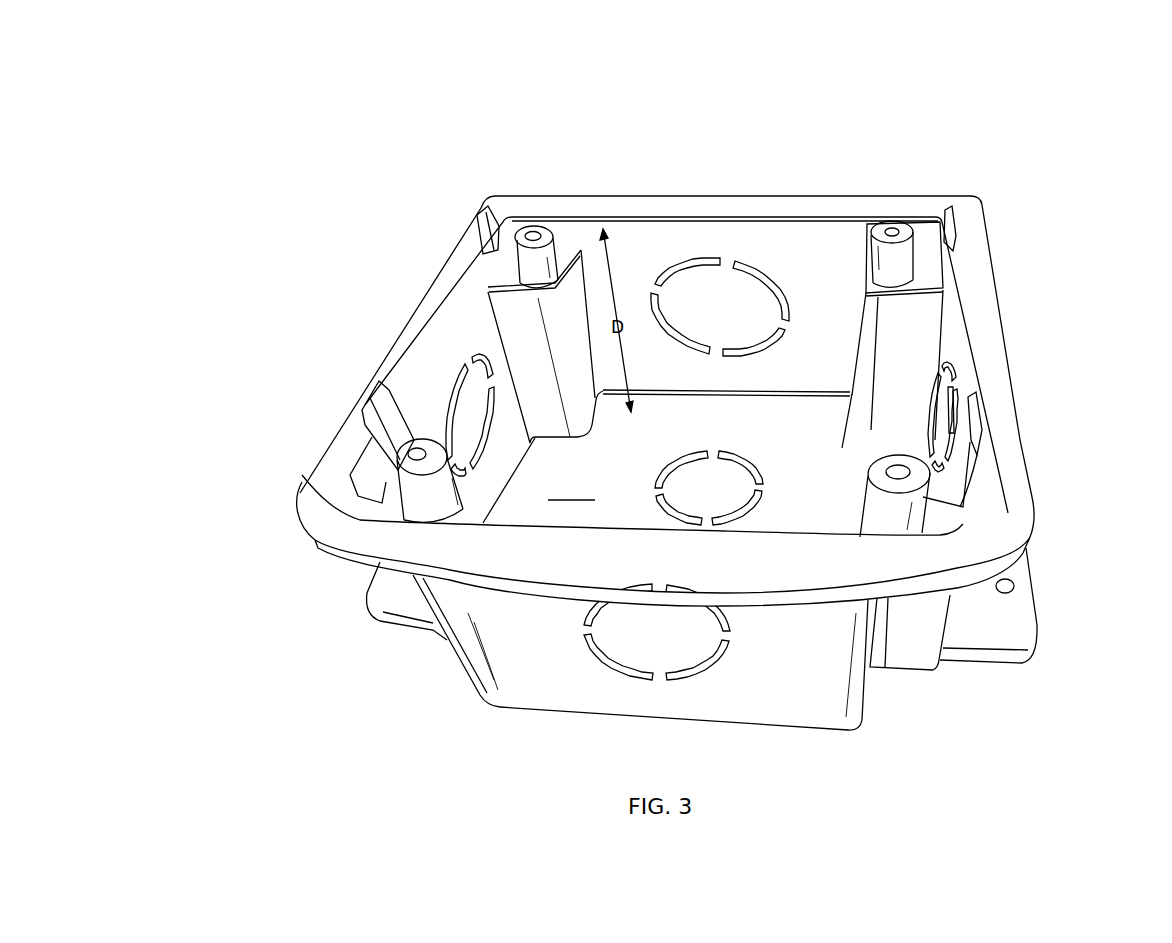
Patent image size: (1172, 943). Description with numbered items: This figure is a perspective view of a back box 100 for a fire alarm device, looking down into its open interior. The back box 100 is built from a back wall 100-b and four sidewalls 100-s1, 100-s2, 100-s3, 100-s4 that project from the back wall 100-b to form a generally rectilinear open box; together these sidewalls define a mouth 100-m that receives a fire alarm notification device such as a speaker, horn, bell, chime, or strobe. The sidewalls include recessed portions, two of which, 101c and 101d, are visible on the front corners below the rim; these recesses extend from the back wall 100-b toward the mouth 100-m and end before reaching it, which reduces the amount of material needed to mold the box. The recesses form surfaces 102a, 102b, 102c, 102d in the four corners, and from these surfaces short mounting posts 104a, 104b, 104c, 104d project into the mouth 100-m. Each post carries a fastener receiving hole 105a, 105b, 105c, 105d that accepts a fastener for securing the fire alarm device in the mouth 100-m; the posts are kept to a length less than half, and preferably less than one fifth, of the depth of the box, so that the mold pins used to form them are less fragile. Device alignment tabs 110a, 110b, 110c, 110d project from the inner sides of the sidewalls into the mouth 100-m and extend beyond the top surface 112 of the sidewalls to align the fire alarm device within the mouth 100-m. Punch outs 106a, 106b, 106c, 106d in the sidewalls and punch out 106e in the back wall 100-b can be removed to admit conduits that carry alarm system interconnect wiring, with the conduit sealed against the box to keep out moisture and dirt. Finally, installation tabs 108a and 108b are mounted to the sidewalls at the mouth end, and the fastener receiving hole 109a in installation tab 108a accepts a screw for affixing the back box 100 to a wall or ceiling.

The back box 100 is at (338, 114).
The mouth 100-m is at (832, 182).
The back wall 100-b is at (572, 491).
The sidewall 100-s1 is at (700, 232).
The sidewall 100-s2 is at (470, 330).
The sidewall 100-s3 is at (517, 690).
The sidewall 100-s4 is at (940, 333).
The recessed portion 101c is at (461, 662).
The recessed portion 101d is at (902, 689).
The surface 102a is at (497, 280).
The surface 102b is at (933, 280).
The surface 102c is at (377, 502).
The surface 102d is at (963, 524).
The mounting post 104a is at (548, 231).
The mounting post 104b is at (910, 223).
The mounting post 104c is at (397, 458).
The mounting post 104d is at (872, 470).
The fastener receiving hole 105a is at (533, 231).
The fastener receiving hole 105b is at (892, 229).
The fastener receiving hole 105c is at (417, 449).
The fastener receiving hole 105d is at (896, 466).
The punch out 106a is at (447, 377).
The punch out 106b is at (743, 260).
The punch out 106c is at (950, 363).
The punch out 106d is at (612, 667).
The punch out 106e is at (673, 463).
The installation tab 108a is at (1030, 630).
The installation tab 108b is at (367, 597).
The fastener receiving hole 109a is at (1014, 581).
The device alignment tab 110a is at (474, 240).
The device alignment tab 110b is at (957, 240).
The device alignment tab 110c is at (361, 422).
The device alignment tab 110d is at (983, 413).
The top surface 112 is at (650, 200).